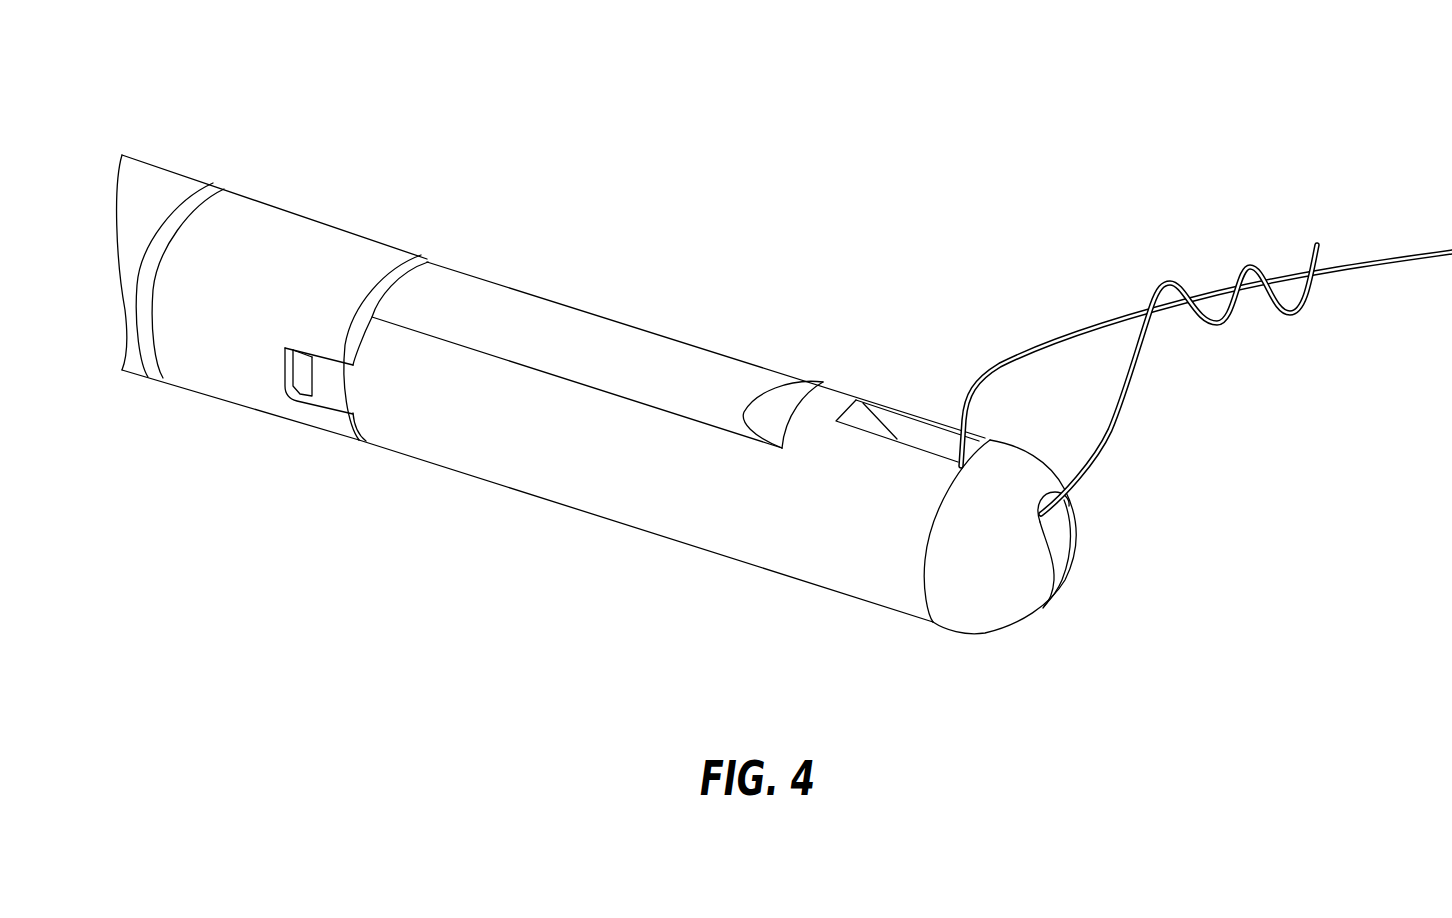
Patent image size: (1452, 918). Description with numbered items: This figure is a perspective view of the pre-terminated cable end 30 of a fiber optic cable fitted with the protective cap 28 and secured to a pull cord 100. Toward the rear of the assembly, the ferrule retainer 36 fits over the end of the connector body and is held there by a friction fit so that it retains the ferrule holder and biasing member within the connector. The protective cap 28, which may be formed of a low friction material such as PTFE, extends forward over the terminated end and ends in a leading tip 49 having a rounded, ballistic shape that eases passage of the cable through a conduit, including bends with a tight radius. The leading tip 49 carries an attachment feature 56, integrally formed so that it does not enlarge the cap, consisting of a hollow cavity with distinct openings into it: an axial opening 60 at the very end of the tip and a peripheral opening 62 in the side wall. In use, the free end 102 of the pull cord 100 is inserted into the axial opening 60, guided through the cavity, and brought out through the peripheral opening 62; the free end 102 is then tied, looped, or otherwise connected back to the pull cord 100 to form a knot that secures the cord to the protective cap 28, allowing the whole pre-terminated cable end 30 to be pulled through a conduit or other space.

The pre-terminated cable end 30 is at (580, 181).
The ferrule retainer 36 is at (228, 385).
The protective cap 28 is at (660, 517).
The peripheral opening 62 is at (903, 423).
The leading tip 49 is at (1022, 612).
The attachment feature 56 is at (1100, 522).
The axial opening 60 is at (1058, 573).
The pull cord 100 is at (1078, 333).
The free end 102 is at (1317, 242).